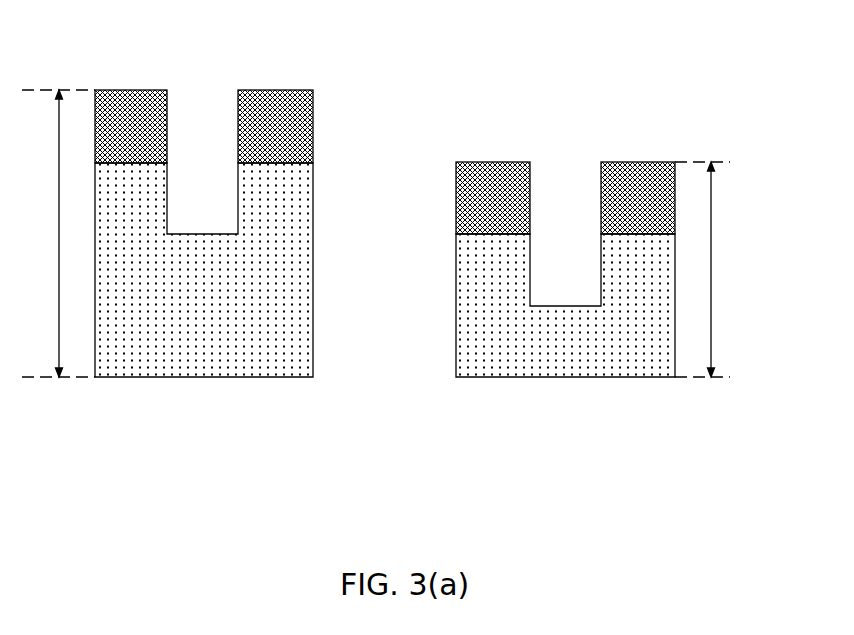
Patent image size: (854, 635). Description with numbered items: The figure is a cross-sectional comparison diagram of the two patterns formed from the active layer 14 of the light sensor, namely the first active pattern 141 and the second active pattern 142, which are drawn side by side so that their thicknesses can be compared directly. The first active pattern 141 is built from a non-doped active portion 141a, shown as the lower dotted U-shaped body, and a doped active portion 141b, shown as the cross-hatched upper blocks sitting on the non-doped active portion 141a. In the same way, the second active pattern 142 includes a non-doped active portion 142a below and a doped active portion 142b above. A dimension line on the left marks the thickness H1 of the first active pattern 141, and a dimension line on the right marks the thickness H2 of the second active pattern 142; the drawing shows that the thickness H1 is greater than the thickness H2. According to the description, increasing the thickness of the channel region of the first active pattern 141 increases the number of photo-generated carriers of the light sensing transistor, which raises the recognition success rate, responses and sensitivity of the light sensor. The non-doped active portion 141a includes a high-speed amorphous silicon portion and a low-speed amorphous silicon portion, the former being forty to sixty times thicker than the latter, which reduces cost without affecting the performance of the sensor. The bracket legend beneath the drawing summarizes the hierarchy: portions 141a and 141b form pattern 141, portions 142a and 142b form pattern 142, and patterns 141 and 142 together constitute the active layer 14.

The active layer 14 is at (371, 278).
The first active pattern 141 is at (244, 277).
The non-doped active portion 141a is at (113, 363).
The doped active portion 141b is at (127, 98).
The second active pattern 142 is at (446, 315).
The non-doped active portion 142a is at (567, 358).
The doped active portion 142b is at (492, 178).
The thickness of the first active pattern H1 is at (57, 233).
The thickness of the second active pattern H2 is at (715, 269).